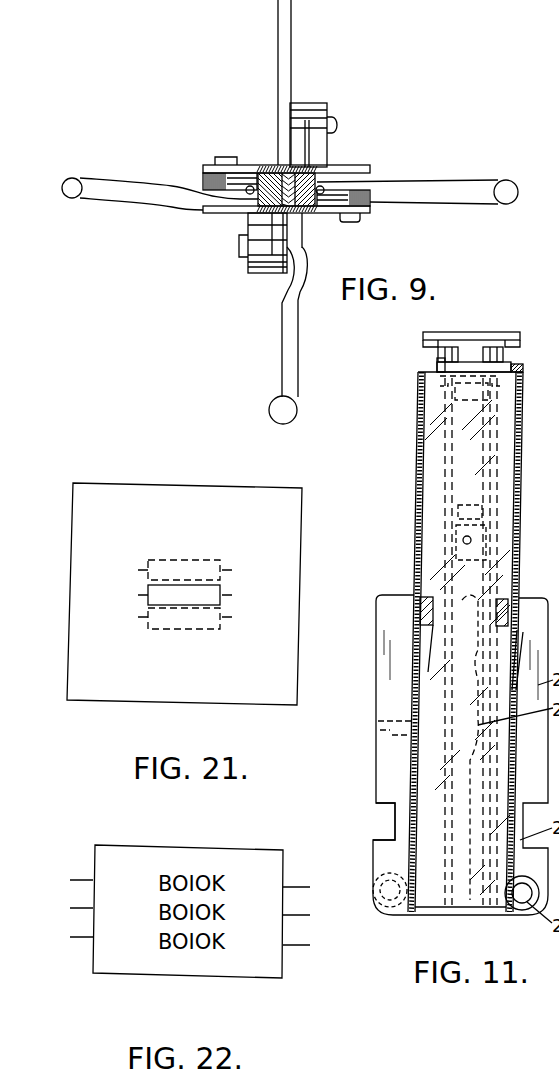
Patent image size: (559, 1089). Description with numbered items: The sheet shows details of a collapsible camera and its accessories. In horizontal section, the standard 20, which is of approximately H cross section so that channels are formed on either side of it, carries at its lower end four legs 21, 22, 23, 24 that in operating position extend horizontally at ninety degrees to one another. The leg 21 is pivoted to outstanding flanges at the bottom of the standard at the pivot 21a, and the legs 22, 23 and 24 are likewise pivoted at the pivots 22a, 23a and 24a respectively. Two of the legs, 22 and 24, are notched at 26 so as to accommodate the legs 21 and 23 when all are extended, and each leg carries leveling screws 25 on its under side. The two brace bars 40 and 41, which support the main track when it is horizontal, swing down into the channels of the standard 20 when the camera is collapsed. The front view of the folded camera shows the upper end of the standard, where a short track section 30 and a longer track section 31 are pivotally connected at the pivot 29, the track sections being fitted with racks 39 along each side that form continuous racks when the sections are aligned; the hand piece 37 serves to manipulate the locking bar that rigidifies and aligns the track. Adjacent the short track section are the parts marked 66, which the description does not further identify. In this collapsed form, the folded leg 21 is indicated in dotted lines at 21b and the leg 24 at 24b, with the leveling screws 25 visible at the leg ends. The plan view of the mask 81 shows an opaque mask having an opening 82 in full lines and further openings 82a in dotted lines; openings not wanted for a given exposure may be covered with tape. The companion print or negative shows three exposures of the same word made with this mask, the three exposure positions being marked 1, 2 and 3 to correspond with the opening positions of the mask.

In FIG. 9, the standard 20 is at (308, 216).
In FIG. 9, the leg 21 is at (410, 190).
In FIG. 9, the pivot of leg 21 21a is at (228, 164).
In FIG. 11, the folded position of leg 21 21b is at (452, 688).
In FIG. 9, the leg 22 is at (289, 79).
In FIG. 9, the pivot of leg 22 22a is at (238, 254).
In FIG. 9, the leg 23 is at (172, 197).
In FIG. 9, the pivot of leg 23 23a is at (352, 222).
In FIG. 9, the leg 24 is at (293, 343).
In FIG. 9, the pivot of leg 24 24a is at (336, 129).
In FIG. 11, the pivot of leg 24 24a is at (400, 893).
In FIG. 11, the folded position of leg 24 24b is at (383, 721).
In FIG. 11, the leveling screws 25 is at (420, 593).
In FIG. 11, the notch 26 is at (395, 813).
In FIG. 11, the pivot 29 is at (443, 368).
In FIG. 11, the short track section 30 is at (465, 341).
In FIG. 11, the longer track section 31 is at (507, 503).
In FIG. 9, the hand piece 37 is at (326, 188).
In FIG. 11, the racks 39 is at (522, 342).
In FIG. 9, the brace bar 40 is at (257, 175).
In FIG. 9, the brace bar 41 is at (317, 177).
In FIG. 11, the support post 66 is at (437, 348).
In FIG. 21, the mask 81 is at (302, 577).
In FIG. 21, the opening 82 is at (220, 588).
In FIG. 21, the opening 82a is at (213, 560).
In FIG. 21, the terminal 1 is at (185, 596).
In FIG. 22, the terminal 1 is at (189, 913).
In FIG. 21, the terminal 2 is at (184, 571).
In FIG. 22, the terminal 2 is at (189, 885).
In FIG. 21, the terminal 3 is at (184, 618).
In FIG. 22, the terminal 3 is at (189, 942).